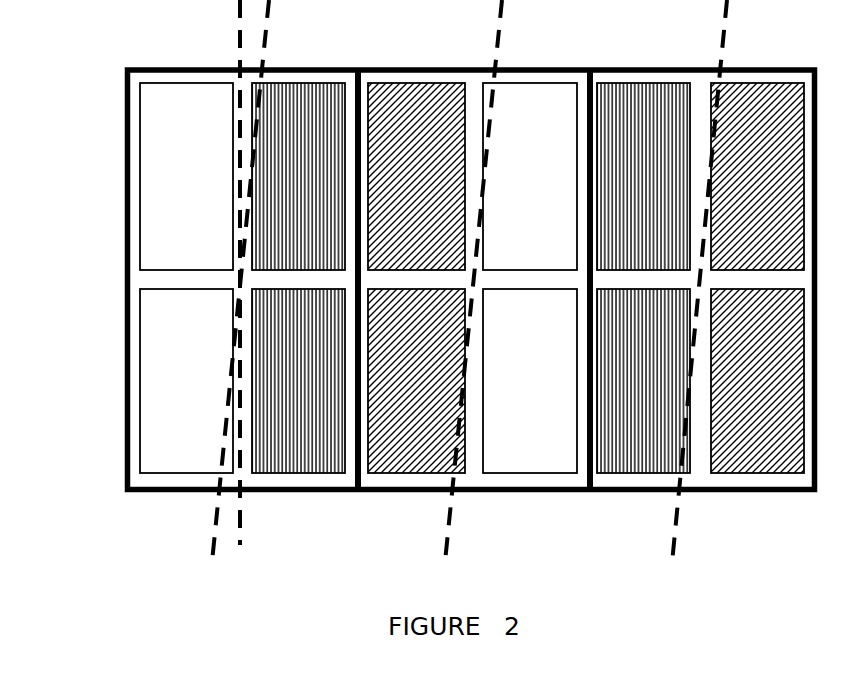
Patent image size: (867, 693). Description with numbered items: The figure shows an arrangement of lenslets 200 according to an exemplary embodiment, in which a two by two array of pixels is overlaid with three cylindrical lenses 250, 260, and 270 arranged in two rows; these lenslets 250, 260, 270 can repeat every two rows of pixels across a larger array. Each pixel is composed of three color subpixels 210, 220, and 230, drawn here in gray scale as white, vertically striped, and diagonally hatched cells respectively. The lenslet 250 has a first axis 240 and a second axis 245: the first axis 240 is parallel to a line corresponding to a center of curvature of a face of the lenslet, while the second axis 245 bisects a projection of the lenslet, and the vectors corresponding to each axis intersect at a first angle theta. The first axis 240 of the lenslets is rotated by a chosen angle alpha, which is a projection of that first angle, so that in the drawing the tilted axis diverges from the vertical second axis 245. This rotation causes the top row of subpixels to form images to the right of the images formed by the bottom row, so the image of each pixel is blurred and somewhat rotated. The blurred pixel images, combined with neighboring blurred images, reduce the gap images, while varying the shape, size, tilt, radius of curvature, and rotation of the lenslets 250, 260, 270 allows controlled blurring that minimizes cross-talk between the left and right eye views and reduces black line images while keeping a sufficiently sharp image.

The arrangement of lenslets 200 is at (142, 590).
The color subpixel 210 is at (187, 463).
The color subpixel 220 is at (327, 470).
The color subpixel 230 is at (430, 473).
The first axis 240 is at (235, 552).
The second axis 245 is at (214, 272).
The cylindrical lens 250 is at (127, 338).
The cylindrical lens 260 is at (520, 493).
The cylindrical lens 270 is at (712, 493).